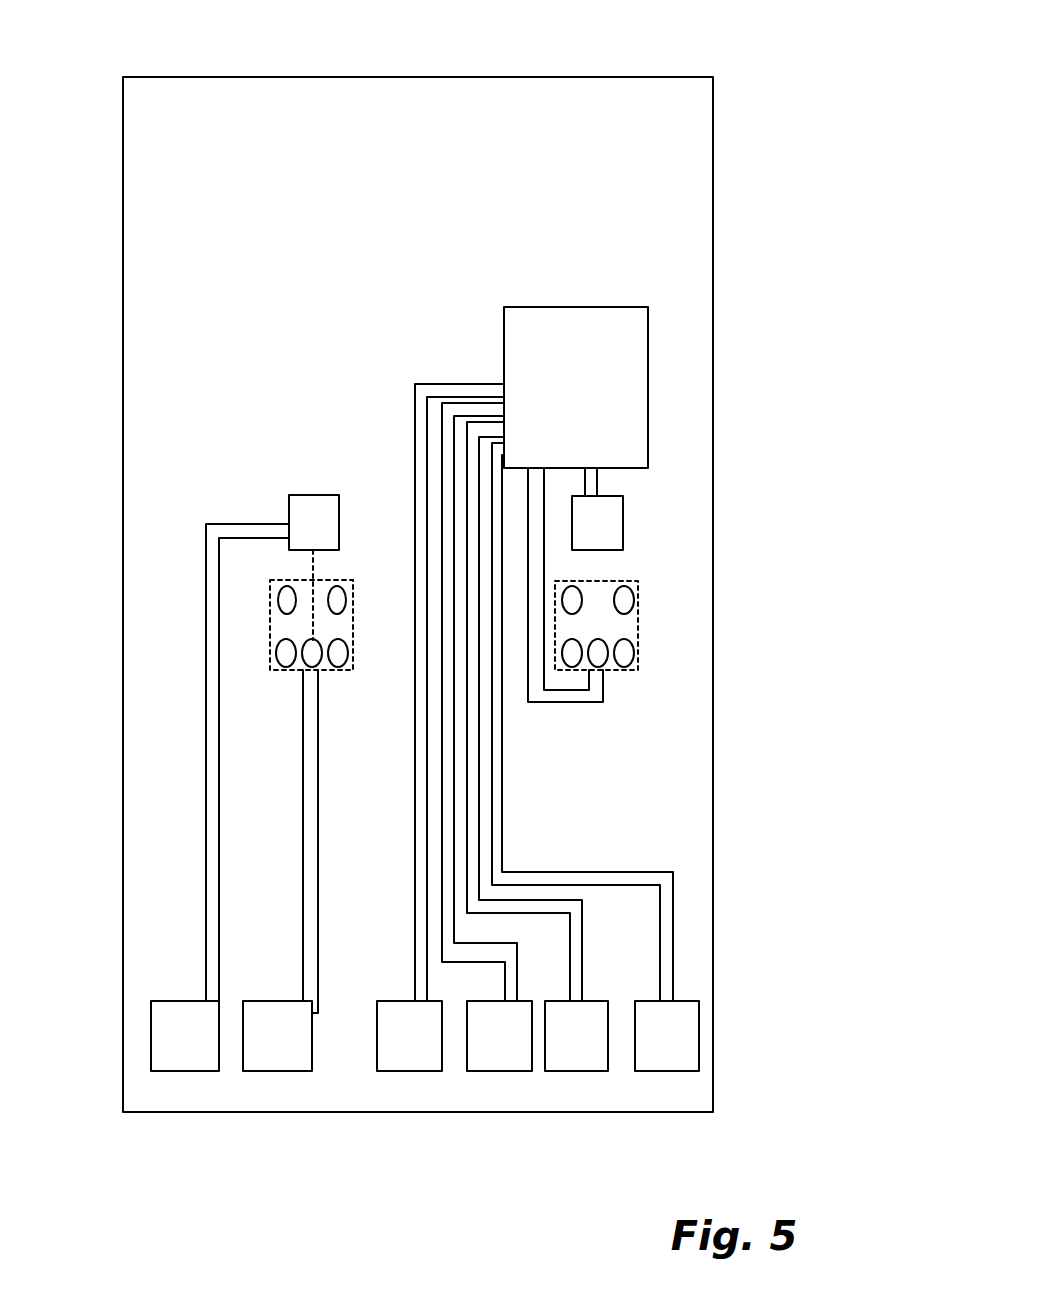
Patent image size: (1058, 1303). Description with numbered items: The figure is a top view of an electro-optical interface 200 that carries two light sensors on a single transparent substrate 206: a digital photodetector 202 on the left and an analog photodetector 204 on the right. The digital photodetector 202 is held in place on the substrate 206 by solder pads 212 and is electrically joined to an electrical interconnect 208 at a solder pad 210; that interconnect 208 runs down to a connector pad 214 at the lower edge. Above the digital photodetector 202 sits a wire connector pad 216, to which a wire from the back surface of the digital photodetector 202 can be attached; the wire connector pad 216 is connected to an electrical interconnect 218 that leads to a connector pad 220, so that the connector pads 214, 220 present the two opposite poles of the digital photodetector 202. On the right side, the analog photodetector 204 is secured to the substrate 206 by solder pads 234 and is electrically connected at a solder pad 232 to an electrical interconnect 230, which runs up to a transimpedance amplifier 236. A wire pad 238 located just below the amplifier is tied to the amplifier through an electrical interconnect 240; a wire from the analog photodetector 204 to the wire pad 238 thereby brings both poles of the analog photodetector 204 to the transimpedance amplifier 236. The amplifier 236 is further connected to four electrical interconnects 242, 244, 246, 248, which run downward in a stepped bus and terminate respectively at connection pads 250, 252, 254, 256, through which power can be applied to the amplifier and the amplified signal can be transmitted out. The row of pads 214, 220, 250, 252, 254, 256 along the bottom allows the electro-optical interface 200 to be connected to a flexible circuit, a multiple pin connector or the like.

The electro-optical interface 200 is at (444, 559).
The digital photodetector 202 is at (327, 582).
The analog photodetector 204 is at (625, 622).
The transparent substrate 206 is at (648, 182).
The electrical interconnect 208 is at (303, 830).
The solder pad 210 is at (307, 667).
The solder pads 212 is at (282, 650).
The connector pad 214 is at (271, 1055).
The wire connector pad 216 is at (308, 520).
The electrical interconnect 218 is at (215, 727).
The connector pad 220 is at (175, 1055).
The electrical interconnect 230 is at (545, 697).
The solder pad 232 is at (600, 662).
The solder pads 234 is at (566, 647).
The transimpedance amplifier 236 is at (544, 335).
The wire pad 238 is at (605, 512).
The electrical interconnect 240 is at (597, 478).
The electrical interconnect 242 is at (573, 870).
The electrical interconnect 244 is at (575, 942).
The electrical interconnect 246 is at (447, 840).
The electrical interconnect 248 is at (425, 937).
The connection pad 250 is at (680, 1028).
The connection pad 252 is at (565, 1057).
The connection pad 254 is at (484, 1060).
The connection pad 256 is at (395, 1060).